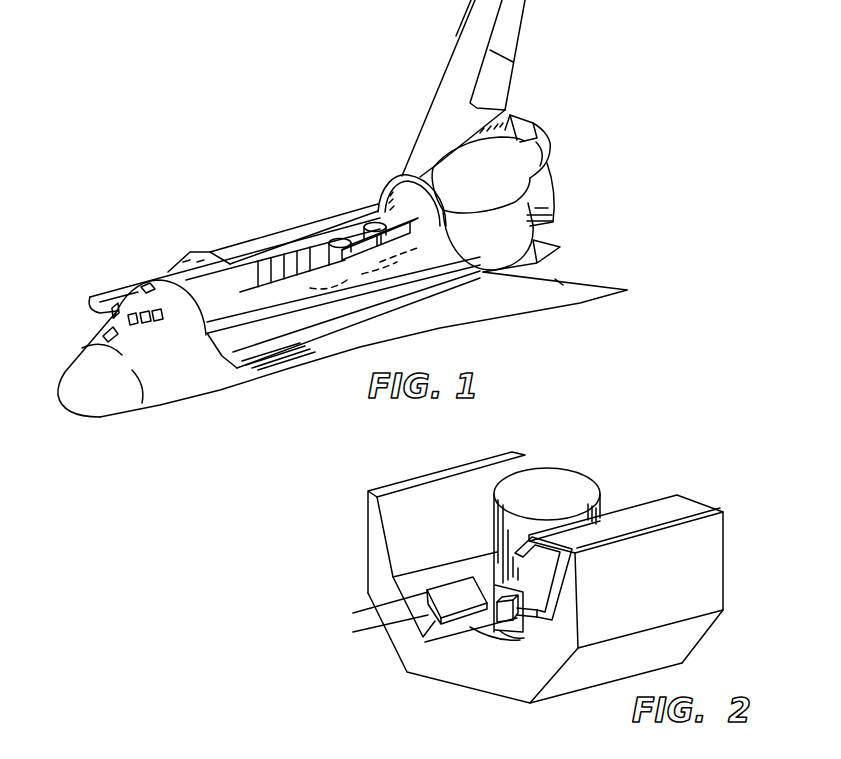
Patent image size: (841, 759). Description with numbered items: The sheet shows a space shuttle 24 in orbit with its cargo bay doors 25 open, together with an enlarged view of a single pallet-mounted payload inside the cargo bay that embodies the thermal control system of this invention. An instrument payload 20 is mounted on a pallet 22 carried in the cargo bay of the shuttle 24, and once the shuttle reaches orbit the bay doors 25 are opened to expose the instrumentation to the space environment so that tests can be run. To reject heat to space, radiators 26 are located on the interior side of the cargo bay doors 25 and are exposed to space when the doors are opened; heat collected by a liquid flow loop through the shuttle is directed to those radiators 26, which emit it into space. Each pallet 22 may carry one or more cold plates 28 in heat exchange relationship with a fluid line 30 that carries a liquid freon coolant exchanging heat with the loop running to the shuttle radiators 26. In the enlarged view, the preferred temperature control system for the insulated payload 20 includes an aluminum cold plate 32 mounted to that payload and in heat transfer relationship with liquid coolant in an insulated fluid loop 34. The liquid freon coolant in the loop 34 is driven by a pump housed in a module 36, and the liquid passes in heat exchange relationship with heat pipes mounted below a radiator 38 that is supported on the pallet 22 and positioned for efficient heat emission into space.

In FIG. 1, the instrument payload 20 is at (343, 233).
In FIG. 2, the instrument payload 20 is at (584, 476).
In FIG. 1, the pallet 22 is at (307, 237).
In FIG. 2, the pallet 22 is at (713, 633).
In FIG. 1, the shuttle 24 is at (73, 420).
In FIG. 1, the bay doors 25 is at (283, 367).
In FIG. 1, the radiators 26 is at (107, 290).
In FIG. 2, the cold plates 28 is at (433, 625).
In FIG. 2, the fluid line 30 is at (355, 613).
In FIG. 2, the aluminum cold plate 32 is at (513, 631).
In FIG. 2, the insulated fluid loop 34 is at (539, 621).
In FIG. 2, the module 36 is at (497, 625).
In FIG. 2, the radiator 38 is at (701, 501).